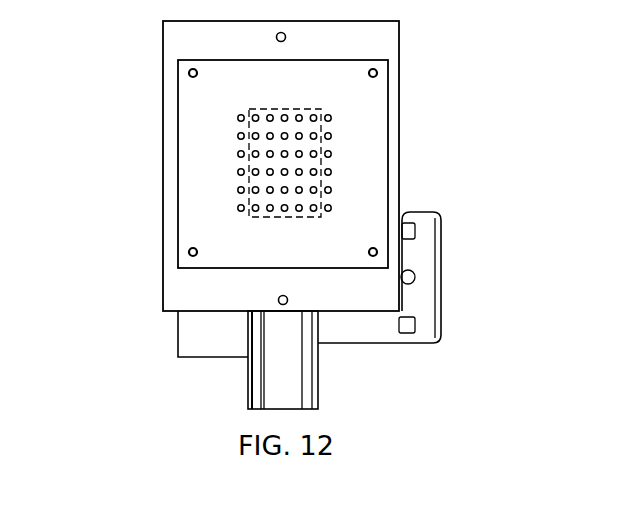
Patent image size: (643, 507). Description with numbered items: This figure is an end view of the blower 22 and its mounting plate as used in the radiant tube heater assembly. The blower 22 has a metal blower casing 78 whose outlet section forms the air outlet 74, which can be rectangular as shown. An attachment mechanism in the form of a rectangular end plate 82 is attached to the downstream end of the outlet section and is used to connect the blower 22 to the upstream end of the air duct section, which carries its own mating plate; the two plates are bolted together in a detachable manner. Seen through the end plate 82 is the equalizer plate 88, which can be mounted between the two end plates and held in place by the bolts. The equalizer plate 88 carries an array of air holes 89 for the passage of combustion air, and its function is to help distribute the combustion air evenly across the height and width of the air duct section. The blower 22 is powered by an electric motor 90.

The blower 22 is at (515, 206).
The air outlet 74 is at (335, 178).
The blower casing 78 is at (310, 368).
The end plate 82 is at (370, 38).
The equalizer plate 88 is at (388, 87).
The air holes 89 is at (331, 190).
The electric motor 90 is at (419, 268).